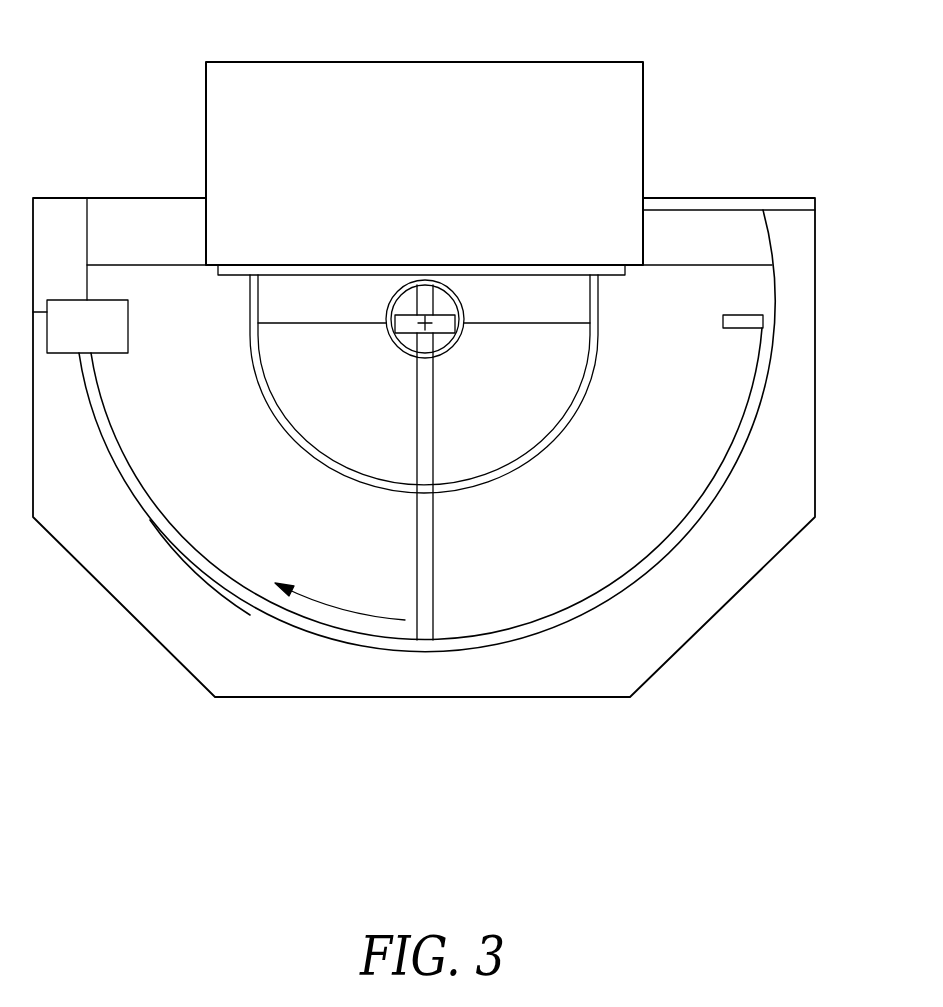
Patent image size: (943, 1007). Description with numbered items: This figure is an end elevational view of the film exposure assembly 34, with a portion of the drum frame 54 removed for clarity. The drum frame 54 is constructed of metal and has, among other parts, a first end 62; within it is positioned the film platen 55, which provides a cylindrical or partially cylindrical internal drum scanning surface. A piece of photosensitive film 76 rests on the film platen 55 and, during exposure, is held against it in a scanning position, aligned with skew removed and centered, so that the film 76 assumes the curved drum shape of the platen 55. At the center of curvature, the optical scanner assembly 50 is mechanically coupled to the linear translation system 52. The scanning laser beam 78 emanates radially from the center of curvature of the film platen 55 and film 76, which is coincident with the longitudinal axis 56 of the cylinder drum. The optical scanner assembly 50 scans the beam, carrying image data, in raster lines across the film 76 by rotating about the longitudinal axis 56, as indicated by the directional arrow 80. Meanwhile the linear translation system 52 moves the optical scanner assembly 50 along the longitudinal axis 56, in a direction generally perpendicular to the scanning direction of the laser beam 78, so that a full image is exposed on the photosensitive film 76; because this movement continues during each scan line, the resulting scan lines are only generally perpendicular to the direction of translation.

The film exposure assembly 34 is at (118, 120).
The optical scanner assembly 50 is at (565, 463).
The linear translation system 52 is at (412, 62).
The drum frame 54 is at (815, 473).
The film platen 55 is at (748, 392).
The longitudinal axis 56 is at (425, 323).
The first end 62 is at (722, 489).
The photosensitive film 76 is at (195, 552).
The scanning laser beam 78 is at (433, 588).
The directional arrow 80 is at (355, 612).